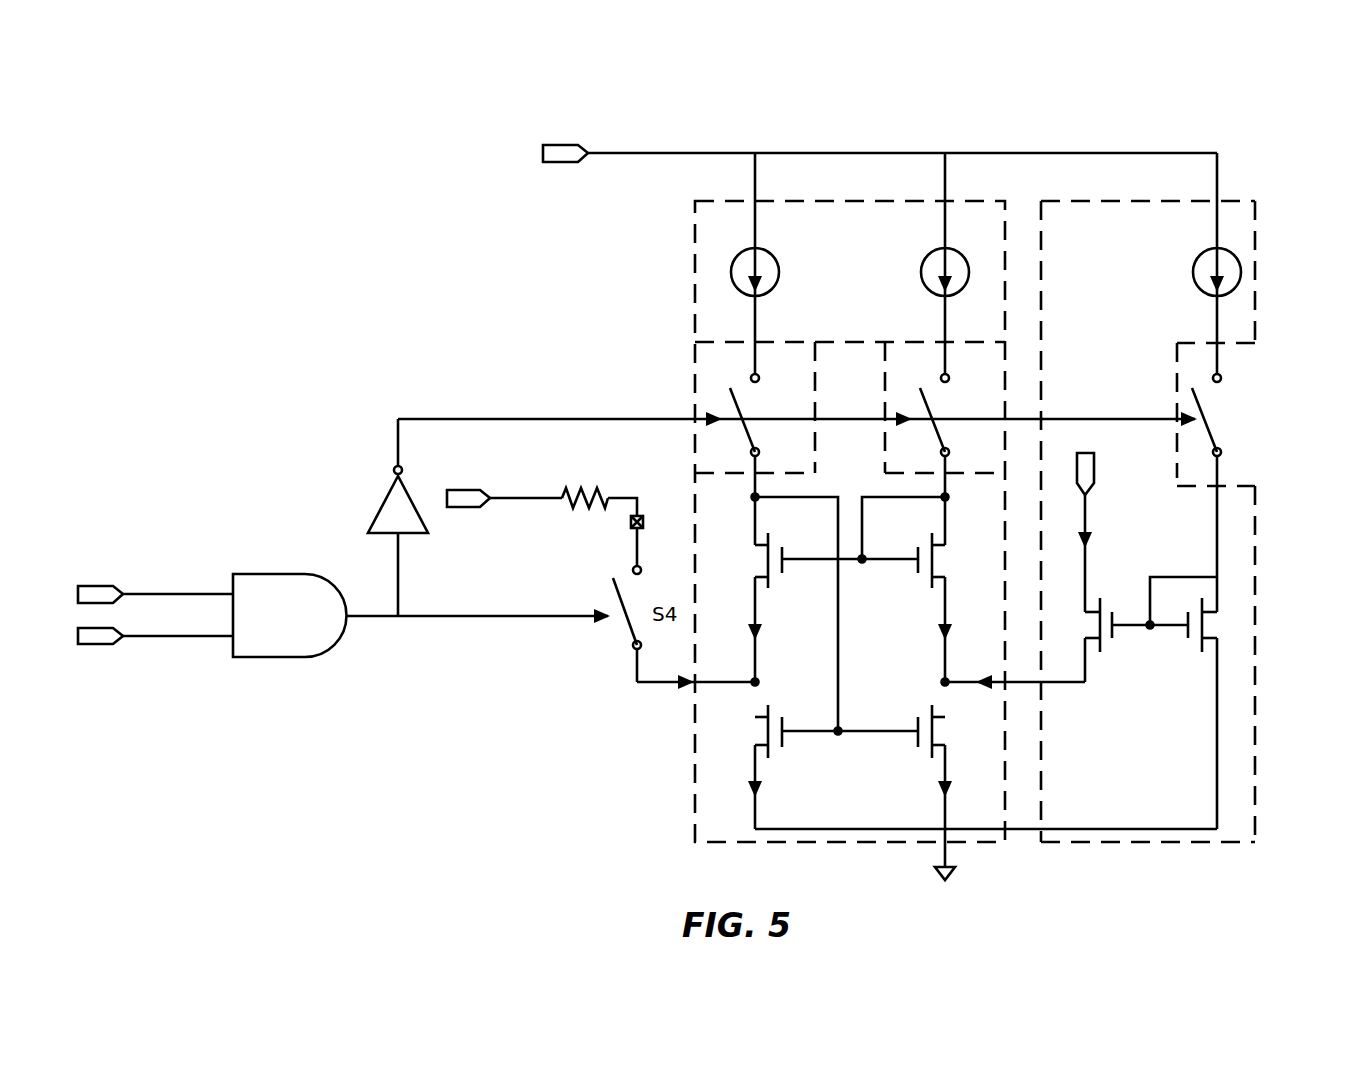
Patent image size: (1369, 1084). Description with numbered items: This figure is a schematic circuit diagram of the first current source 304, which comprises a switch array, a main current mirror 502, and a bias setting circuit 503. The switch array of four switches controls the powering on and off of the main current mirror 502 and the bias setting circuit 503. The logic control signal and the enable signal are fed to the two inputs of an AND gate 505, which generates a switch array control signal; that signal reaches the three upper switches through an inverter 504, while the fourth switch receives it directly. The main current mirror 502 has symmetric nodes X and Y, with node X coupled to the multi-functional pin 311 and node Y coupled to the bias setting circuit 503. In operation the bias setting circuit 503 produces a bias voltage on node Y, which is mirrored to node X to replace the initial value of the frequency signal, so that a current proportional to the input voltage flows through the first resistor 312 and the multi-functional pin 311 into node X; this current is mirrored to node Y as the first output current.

The first current source 304 is at (910, 104).
The main current mirror 502 is at (695, 218).
The bias setting circuit 503 is at (1255, 212).
The inverter 504 is at (377, 508).
The AND gate 505 is at (263, 574).
The multi-functional pin 311 is at (641, 514).
The first resistor 312 is at (586, 486).